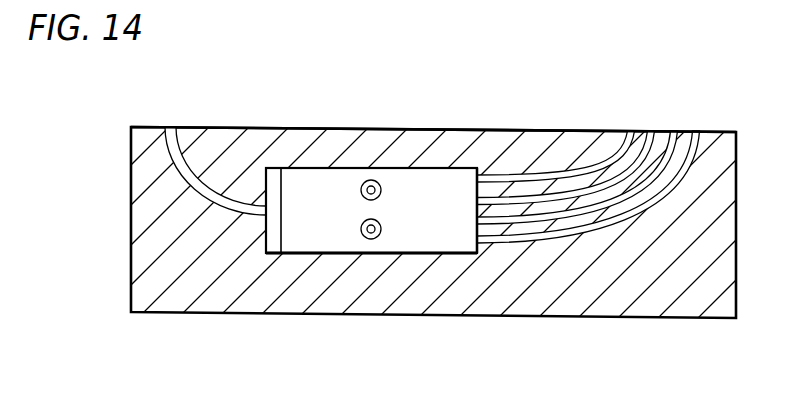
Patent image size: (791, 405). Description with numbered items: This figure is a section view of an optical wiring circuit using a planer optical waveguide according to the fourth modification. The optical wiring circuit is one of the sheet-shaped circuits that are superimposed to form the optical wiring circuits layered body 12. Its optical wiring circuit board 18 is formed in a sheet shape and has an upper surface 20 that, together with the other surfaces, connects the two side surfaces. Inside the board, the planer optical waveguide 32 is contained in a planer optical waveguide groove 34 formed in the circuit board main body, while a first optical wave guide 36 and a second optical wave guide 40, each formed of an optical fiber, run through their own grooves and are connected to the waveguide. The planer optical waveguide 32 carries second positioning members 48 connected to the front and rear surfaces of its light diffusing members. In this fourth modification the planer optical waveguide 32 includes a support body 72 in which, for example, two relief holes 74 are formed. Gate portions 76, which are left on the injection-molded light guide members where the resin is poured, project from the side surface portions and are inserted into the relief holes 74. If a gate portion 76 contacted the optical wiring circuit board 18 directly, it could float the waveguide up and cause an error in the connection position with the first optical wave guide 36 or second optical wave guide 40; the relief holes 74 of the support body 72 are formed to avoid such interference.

The optical wiring circuits layered body 12 is at (126, 151).
The optical wiring circuit board 18 is at (633, 300).
The upper surface 20 is at (569, 130).
The planer optical waveguide 32 is at (428, 264).
The planer optical waveguide groove 34 is at (322, 248).
The first optical wave guide 36 is at (209, 205).
The second optical wave guide 40 is at (584, 237).
The second positioning member 48 is at (276, 243).
The support body 72 is at (462, 240).
The relief hole 74 is at (374, 187).
The gate portion 76 is at (364, 181).